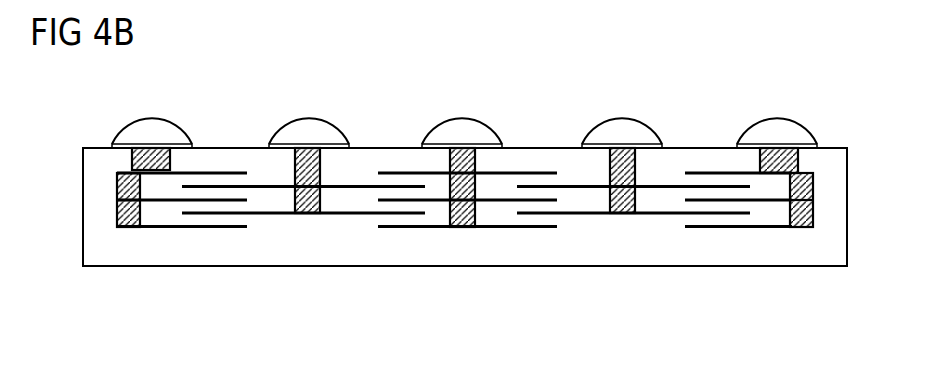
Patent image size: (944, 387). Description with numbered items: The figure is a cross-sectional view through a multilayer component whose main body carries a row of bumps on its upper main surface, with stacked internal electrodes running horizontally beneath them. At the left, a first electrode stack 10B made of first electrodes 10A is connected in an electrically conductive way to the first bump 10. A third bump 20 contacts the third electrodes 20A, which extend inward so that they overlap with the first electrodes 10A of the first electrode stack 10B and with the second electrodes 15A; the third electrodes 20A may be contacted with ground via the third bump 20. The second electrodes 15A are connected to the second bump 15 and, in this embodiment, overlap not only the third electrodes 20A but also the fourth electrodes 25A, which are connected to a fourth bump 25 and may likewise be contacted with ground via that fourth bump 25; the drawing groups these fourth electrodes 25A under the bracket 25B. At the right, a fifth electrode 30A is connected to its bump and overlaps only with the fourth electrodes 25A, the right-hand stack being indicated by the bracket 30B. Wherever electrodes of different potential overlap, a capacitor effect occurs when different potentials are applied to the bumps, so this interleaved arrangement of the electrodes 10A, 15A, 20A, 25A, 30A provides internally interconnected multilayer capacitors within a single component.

The first bump 10 is at (152, 135).
The first electrodes 10A is at (202, 226).
The first electrode stack 10B is at (112, 232).
The third bump 20 is at (308, 136).
The third electrodes 20A is at (272, 190).
The second bump 15 is at (462, 138).
The second electrodes 15A is at (413, 226).
The fourth bump 25 is at (622, 135).
The fourth electrodes 25A is at (548, 217).
The wiring group of fourth element 25B is at (633, 269).
The fifth electrode 30A is at (777, 135).
The second side electrode block 30B is at (818, 235).